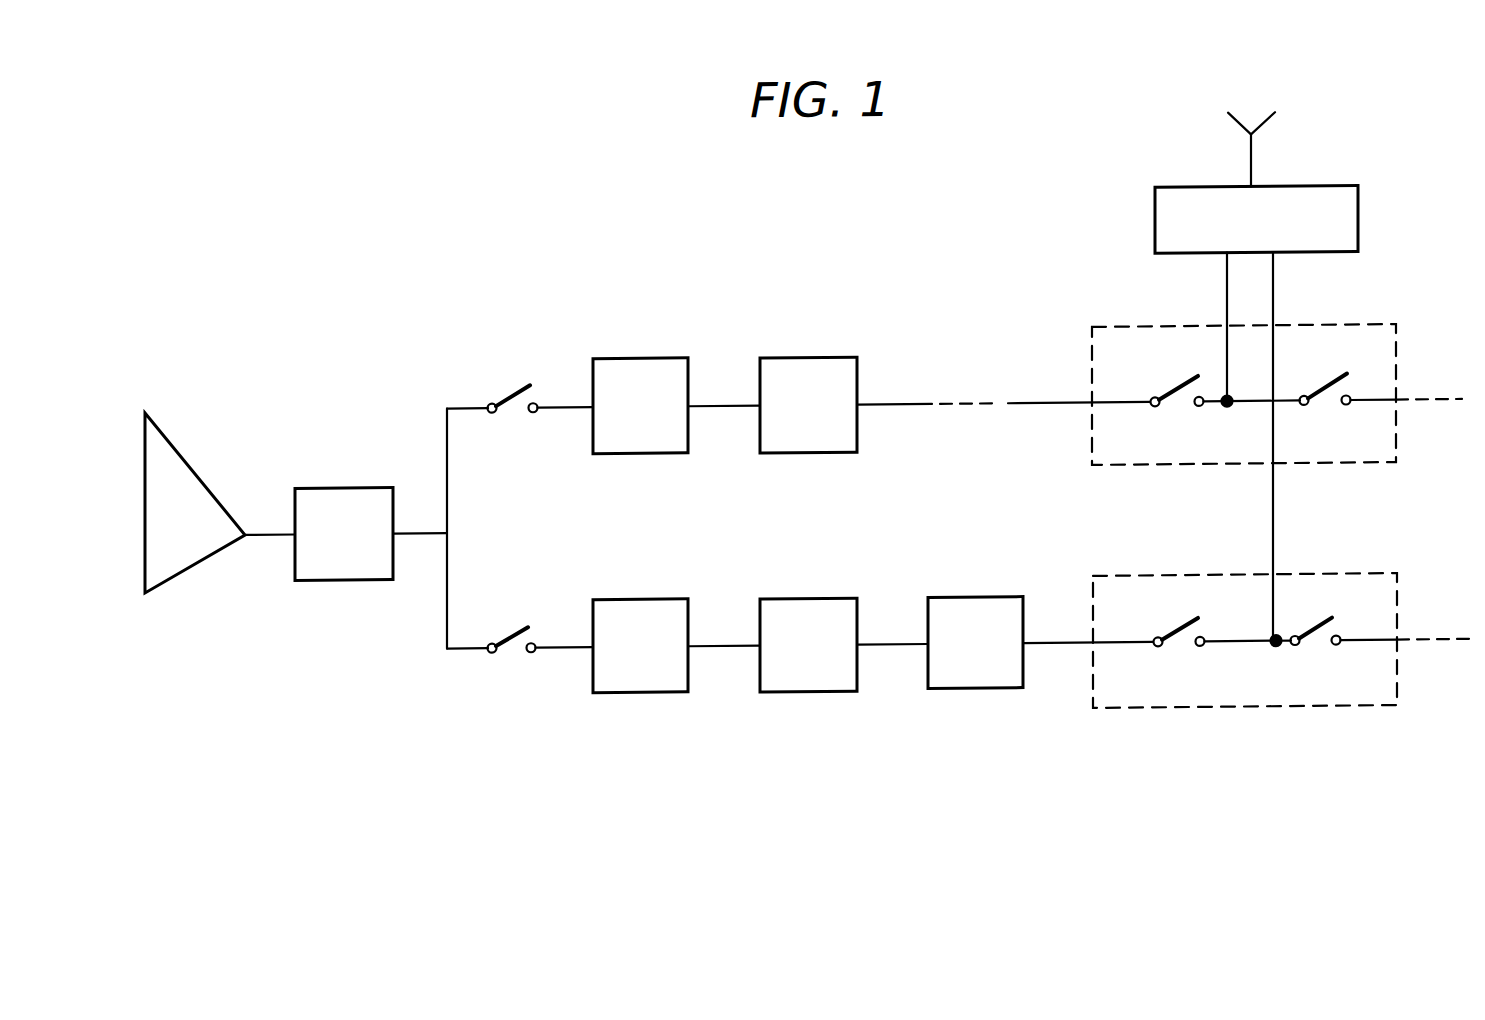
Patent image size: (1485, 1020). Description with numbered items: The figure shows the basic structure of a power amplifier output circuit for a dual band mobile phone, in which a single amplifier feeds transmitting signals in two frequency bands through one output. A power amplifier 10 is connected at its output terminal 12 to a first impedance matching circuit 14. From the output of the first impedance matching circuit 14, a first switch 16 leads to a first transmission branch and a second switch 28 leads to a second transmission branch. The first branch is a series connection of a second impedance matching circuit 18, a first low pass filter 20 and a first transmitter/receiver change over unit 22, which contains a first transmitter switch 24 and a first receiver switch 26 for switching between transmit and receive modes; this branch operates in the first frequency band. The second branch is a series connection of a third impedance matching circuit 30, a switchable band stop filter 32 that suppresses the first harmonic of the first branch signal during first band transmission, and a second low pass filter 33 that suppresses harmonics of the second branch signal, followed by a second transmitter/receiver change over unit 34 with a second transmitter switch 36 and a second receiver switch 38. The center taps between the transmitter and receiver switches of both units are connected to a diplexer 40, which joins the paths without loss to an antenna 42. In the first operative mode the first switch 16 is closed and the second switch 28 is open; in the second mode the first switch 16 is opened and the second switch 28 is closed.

The power amplifier 10 is at (190, 503).
The output terminal 12 is at (246, 531).
The first impedance matching circuit 14 is at (342, 487).
The first switch 16 is at (534, 366).
The second impedance matching circuit 18 is at (638, 360).
The first low pass filter 20 is at (808, 361).
The first transmitter/receiver change over unit 22 is at (1355, 332).
The first transmitter switch 24 is at (1180, 395).
The first receiver switch 26 is at (1322, 386).
The second switch 28 is at (528, 605).
The third impedance matching circuit 30 is at (640, 601).
The switchable band stop filter 32 is at (808, 602).
The second low pass filter 33 is at (975, 602).
The second transmitter/receiver change over unit 34 is at (1350, 581).
The second transmitter switch 36 is at (1180, 641).
The second receiver switch 38 is at (1312, 634).
The diplexer 40 is at (1358, 221).
The antenna 42 is at (1266, 128).